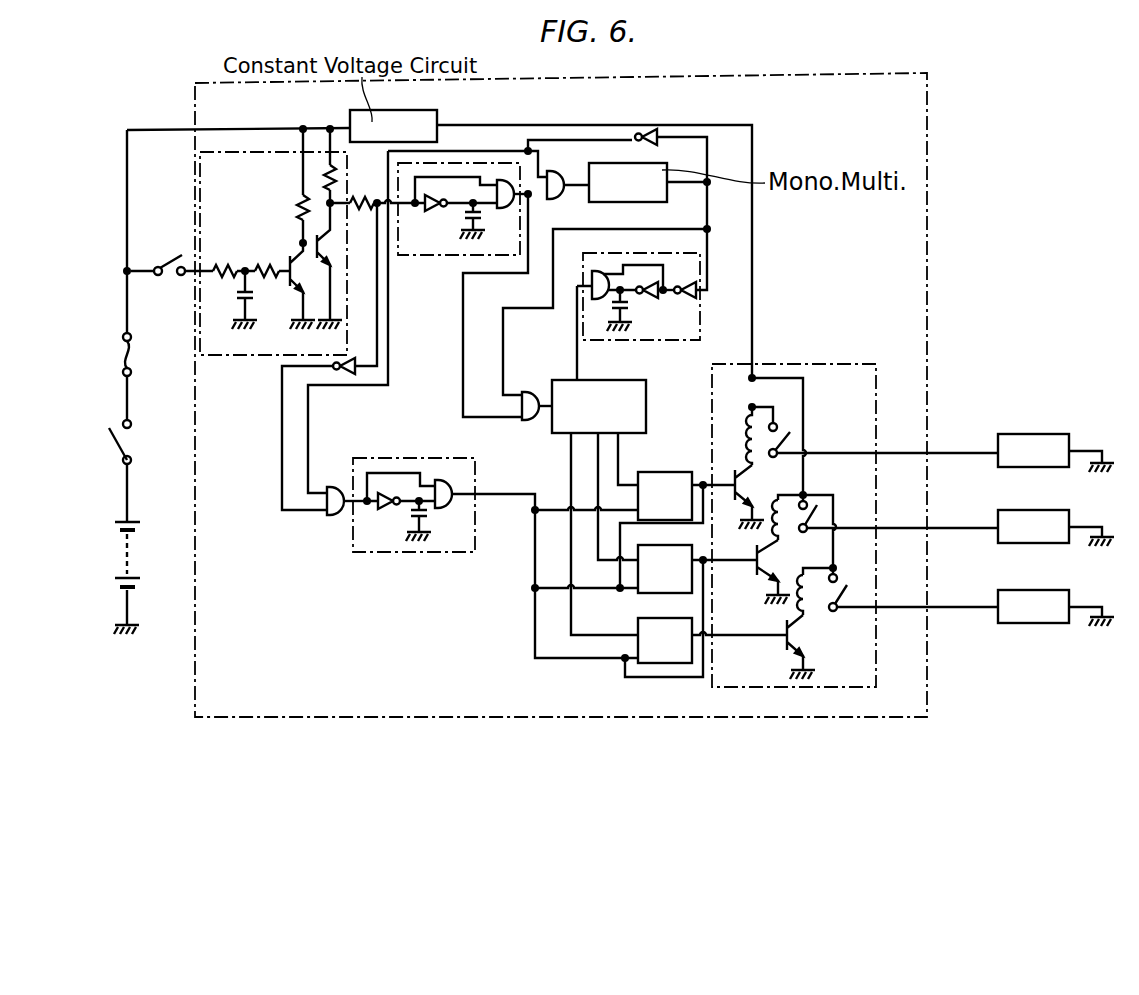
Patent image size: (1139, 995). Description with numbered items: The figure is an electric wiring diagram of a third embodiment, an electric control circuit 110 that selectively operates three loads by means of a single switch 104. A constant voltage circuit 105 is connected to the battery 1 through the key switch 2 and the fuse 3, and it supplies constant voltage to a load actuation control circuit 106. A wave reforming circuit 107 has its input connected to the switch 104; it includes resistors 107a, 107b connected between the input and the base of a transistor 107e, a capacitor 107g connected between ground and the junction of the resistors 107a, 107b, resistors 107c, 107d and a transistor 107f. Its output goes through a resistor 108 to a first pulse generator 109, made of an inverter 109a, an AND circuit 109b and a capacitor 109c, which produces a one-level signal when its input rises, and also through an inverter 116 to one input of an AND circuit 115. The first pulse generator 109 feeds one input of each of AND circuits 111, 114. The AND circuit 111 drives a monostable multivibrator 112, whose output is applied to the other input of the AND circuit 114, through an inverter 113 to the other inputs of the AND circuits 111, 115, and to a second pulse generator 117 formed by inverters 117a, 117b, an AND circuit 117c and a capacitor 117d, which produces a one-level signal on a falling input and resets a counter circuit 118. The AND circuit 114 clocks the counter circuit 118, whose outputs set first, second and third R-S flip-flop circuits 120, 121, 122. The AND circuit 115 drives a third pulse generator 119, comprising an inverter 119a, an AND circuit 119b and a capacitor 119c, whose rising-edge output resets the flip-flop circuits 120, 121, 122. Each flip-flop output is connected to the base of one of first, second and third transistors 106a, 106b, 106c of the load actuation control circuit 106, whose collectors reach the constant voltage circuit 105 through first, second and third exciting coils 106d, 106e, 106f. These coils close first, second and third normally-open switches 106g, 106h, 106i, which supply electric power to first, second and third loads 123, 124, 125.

The battery 1 is at (113, 548).
The key switch 2 is at (112, 438).
The fuse 3 is at (120, 360).
The switch 104 is at (170, 258).
The constant voltage circuit 105 is at (439, 116).
The load actuation control circuit 106 is at (862, 362).
The first transistor 106a is at (790, 652).
The second transistor 106b is at (760, 576).
The third transistor 106c is at (733, 505).
The first exciting coil 106d is at (812, 600).
The second exciting coil 106e is at (786, 527).
The third exciting coil 106f is at (748, 440).
The first normally-open switch 106g is at (850, 588).
The second normally-open switch 106h is at (820, 511).
The third normally-open switch 106i is at (793, 434).
The wave reforming circuit 107 is at (214, 360).
The resistor 107a is at (223, 266).
The resistor 107b is at (266, 266).
The resistor 107c is at (297, 212).
The resistor 107d is at (325, 175).
The transistor 107e is at (294, 290).
The transistor 107f is at (332, 247).
The capacitor 107g is at (238, 305).
The resistor 108 is at (368, 197).
The first pulse generator 109 is at (412, 256).
The inverter 109a is at (432, 207).
The AND circuit 109b is at (498, 207).
The capacitor 109c is at (460, 217).
The electric control circuit 110 is at (928, 83).
The AND circuit 111 is at (560, 199).
The monostable multivibrator 112 is at (651, 203).
The inverter 113 is at (656, 130).
The AND circuit 114 is at (529, 425).
The AND circuit 115 is at (326, 519).
The inverter 116 is at (345, 378).
The second pulse generator 117 is at (698, 260).
The inverter 117a is at (693, 298).
The inverter 117b is at (648, 302).
The AND circuit 117c is at (596, 300).
The capacitor 117d is at (638, 302).
The counter circuit 118 is at (647, 412).
The third pulse generator 119 is at (377, 553).
The inverter 119a is at (386, 510).
The AND circuit 119b is at (454, 487).
The capacitor 119c is at (425, 516).
The first R-S flip-flop circuit 120 is at (655, 619).
The second R-S flip-flop circuit 121 is at (650, 546).
The third R-S flip-flop circuit 122 is at (653, 472).
The first load 123 is at (1015, 591).
The second load 124 is at (1018, 506).
The third load 125 is at (1038, 433).